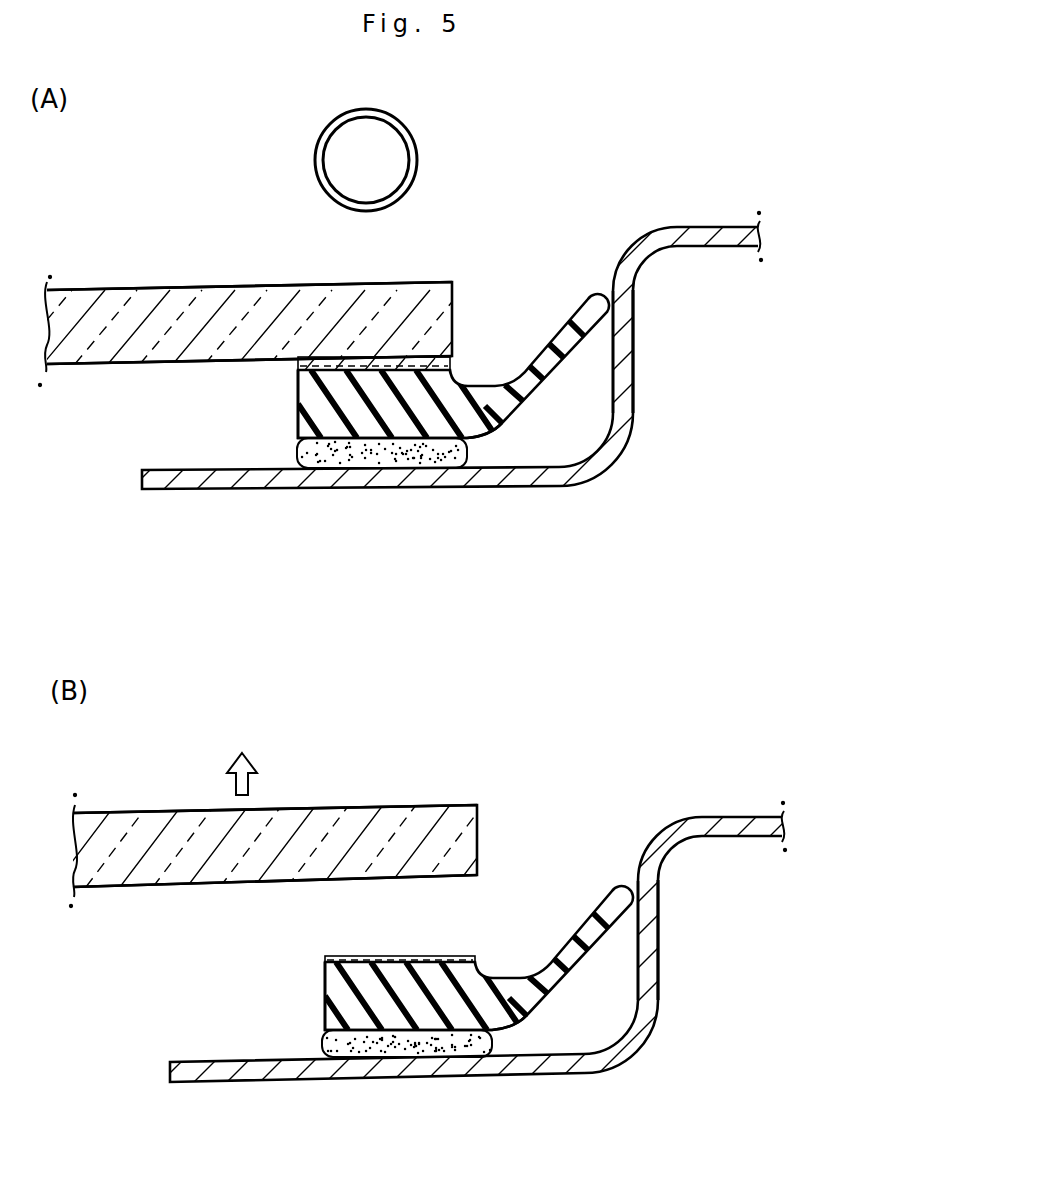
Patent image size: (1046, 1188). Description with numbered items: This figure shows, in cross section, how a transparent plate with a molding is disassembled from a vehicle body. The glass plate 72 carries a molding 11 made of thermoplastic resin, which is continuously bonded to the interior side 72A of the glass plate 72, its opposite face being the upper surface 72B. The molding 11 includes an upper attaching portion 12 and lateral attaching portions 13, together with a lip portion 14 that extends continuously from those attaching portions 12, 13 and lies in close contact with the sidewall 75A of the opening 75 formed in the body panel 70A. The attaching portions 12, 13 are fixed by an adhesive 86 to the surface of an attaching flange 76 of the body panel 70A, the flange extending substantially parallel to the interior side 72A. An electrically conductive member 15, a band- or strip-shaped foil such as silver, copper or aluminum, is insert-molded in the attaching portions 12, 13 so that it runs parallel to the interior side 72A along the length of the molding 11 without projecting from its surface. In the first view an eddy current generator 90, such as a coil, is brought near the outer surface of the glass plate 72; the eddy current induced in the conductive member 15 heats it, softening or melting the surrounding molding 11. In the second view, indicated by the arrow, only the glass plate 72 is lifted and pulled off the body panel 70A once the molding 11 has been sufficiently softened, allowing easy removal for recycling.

The molding 11 is at (497, 443).
The upper attaching portion 12 is at (352, 412).
The lateral attaching portions 13 is at (352, 412).
The lip portion 14 is at (582, 365).
The electrically conductive member 15 is at (400, 365).
The body panel 70A is at (697, 228).
The glass plate 72 is at (178, 312).
The interior side 72A is at (160, 365).
The upper surface of pressing jig 72B is at (252, 285).
The opening 75 is at (583, 277).
The sidewall 75A is at (633, 318).
The attaching flange 76 is at (227, 470).
The adhesive 86 is at (397, 457).
The eddy current generator 90 is at (418, 163).